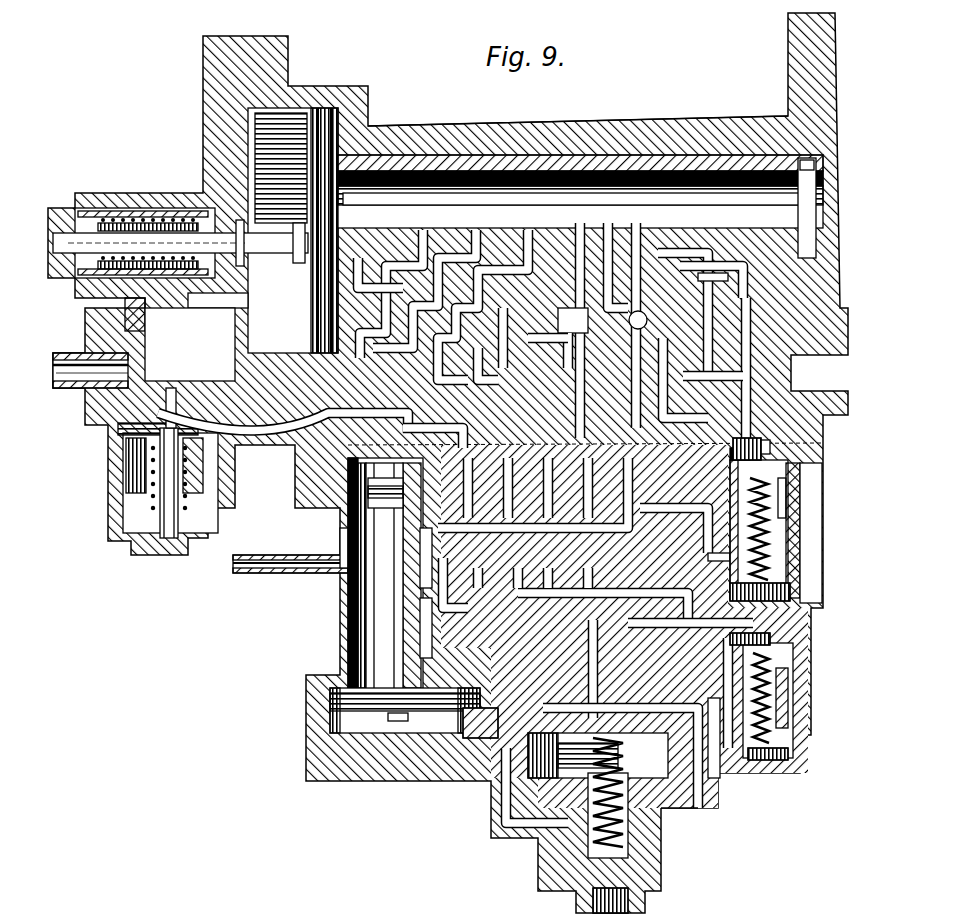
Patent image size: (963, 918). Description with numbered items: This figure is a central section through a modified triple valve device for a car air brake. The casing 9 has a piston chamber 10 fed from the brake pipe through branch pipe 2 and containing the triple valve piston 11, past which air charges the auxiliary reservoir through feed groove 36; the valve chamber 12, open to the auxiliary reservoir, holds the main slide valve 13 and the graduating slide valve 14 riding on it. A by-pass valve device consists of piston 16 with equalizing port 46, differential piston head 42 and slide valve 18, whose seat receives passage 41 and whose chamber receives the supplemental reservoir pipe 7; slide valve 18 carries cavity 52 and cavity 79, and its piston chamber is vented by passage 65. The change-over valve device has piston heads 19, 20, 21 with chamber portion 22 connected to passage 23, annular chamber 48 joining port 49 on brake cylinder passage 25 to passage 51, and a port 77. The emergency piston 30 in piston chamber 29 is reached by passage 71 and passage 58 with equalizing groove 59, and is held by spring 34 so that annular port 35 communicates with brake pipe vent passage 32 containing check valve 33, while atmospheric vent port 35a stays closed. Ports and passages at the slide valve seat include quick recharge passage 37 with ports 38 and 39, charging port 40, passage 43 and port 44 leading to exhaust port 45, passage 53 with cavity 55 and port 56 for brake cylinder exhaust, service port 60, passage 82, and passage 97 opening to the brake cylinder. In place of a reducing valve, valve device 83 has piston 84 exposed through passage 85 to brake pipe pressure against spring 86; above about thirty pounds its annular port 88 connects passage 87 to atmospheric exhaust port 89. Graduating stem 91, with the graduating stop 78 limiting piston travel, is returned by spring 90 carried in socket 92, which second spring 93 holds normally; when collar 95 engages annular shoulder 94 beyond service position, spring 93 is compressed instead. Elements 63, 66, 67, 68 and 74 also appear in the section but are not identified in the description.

The branch pipe 2 is at (70, 370).
The supplemental reservoir pipe 7 is at (285, 565).
The casing 9 is at (700, 112).
The piston chamber 10 is at (235, 320).
The triple valve piston 11 is at (310, 297).
The valve chamber 12 is at (812, 255).
The main slide valve 13 is at (725, 215).
The graduating slide valve 14 is at (640, 208).
The piston 16 is at (400, 695).
The slide valve 18 is at (395, 553).
The piston head 19 is at (790, 462).
The piston head 20 is at (792, 510).
The piston head 21 is at (770, 580).
The chamber portion 22 is at (745, 436).
The passage 23 is at (742, 330).
The brake cylinder passage 25 is at (790, 522).
The piston chamber 29 is at (648, 710).
The piston 30 is at (628, 770).
The brake pipe vent passage 32 is at (272, 415).
The check valve 33 is at (172, 385).
The spring 34 is at (638, 212).
The annular port 35 is at (600, 212).
The atmospheric vent port 35a is at (622, 890).
The feed groove 36 is at (582, 212).
The quick recharge passage 37 is at (470, 318).
The port 38 is at (474, 240).
The port 39 is at (530, 218).
The port 40 is at (425, 238).
The passage 41 is at (332, 506).
The differential piston head 42 is at (392, 432).
The passage 43 is at (660, 360).
The port 44 is at (660, 265).
The exhaust port 45 is at (528, 328).
The equalizing port 46 is at (718, 262).
The annular chamber 48 is at (775, 492).
The port 49 is at (785, 478).
The passage 51 is at (648, 500).
The cavity 52 is at (392, 528).
The passage 53 is at (618, 483).
The cavity 55 is at (480, 368).
The port 56 is at (455, 567).
The passage 58 is at (698, 790).
The equalizing groove 59 is at (680, 803).
The service port 60 is at (642, 240).
The passage 63 is at (552, 293).
The passage 65 is at (470, 748).
The passage 66 is at (545, 325).
The passage 67 is at (548, 325).
The passage 68 is at (705, 550).
The passage 71 is at (676, 320).
The plug 74 is at (770, 445).
The port 77 is at (455, 565).
The graduating stop 78 is at (412, 574).
The cavity 79 is at (412, 598).
The passage 82 is at (588, 327).
The valve device 83 is at (782, 700).
The piston 84 is at (790, 660).
The passage 85 is at (696, 612).
The spring 86 is at (780, 745).
The passage 87 is at (718, 680).
The annular port 88 is at (782, 715).
The atmospheric exhaust port 89 is at (708, 760).
The spring 90 is at (228, 296).
The graduating stem 91 is at (255, 228).
The socket 92 is at (172, 210).
The second spring 93 is at (135, 218).
The annular shoulder 94 is at (150, 285).
The collar 95 is at (245, 242).
The passage 97 is at (708, 368).